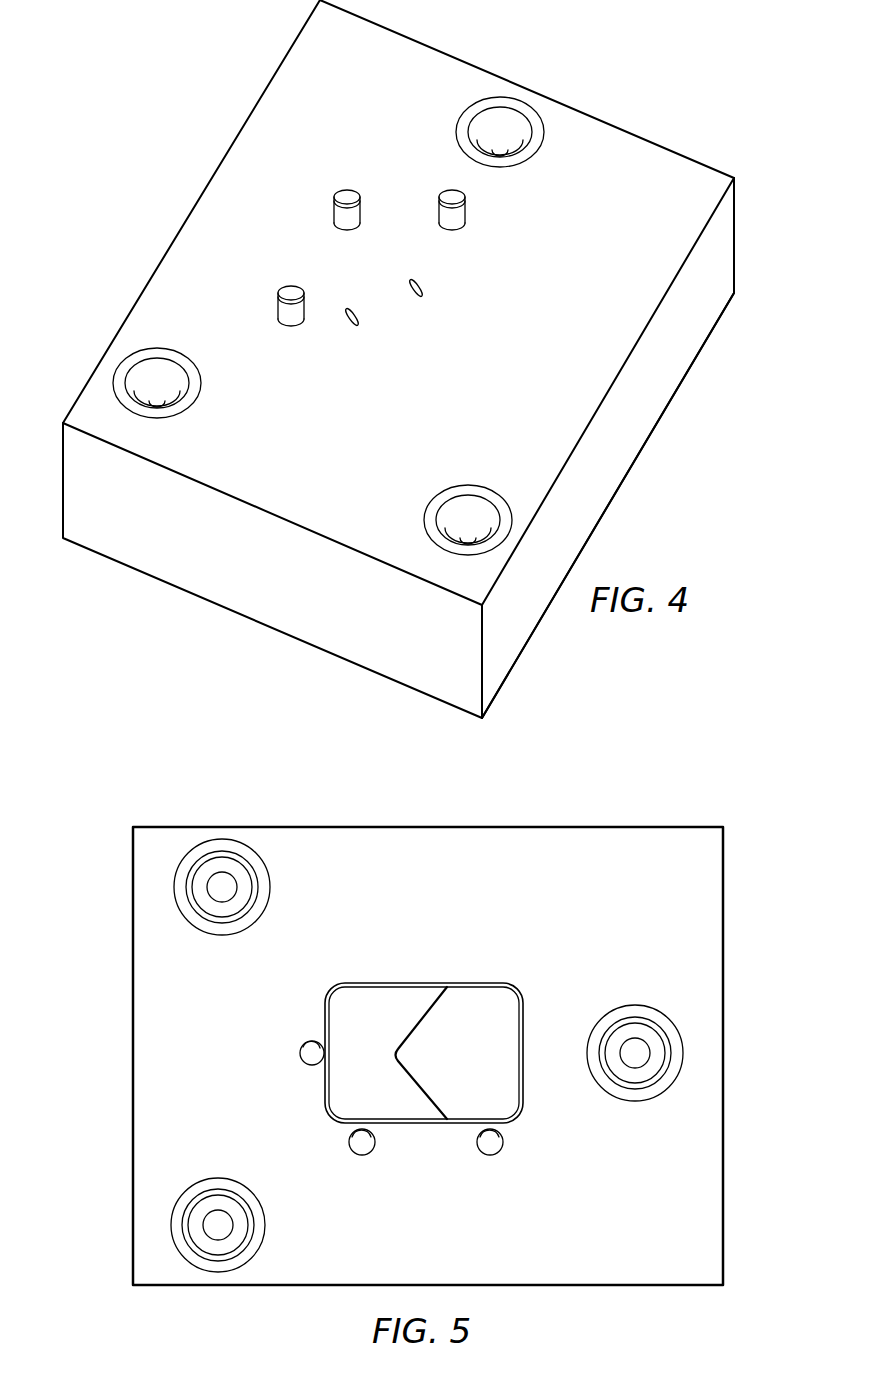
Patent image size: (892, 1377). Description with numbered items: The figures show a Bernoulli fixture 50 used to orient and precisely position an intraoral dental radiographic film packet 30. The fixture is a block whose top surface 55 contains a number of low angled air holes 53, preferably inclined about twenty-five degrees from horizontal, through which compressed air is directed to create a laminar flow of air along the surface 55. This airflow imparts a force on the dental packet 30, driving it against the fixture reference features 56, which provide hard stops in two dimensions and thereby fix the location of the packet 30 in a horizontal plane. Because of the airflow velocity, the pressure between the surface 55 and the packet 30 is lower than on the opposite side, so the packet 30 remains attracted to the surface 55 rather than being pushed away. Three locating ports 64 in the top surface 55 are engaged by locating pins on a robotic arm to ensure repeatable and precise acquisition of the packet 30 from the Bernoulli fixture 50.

In FIG. 5, the intraoral dental radiographic film packet 30 is at (500, 1080).
In FIG. 4, the Bernoulli fixture 50 is at (668, 108).
In FIG. 4, the air holes 53 is at (345, 326).
In FIG. 4, the top surface 55 is at (657, 283).
In FIG. 5, the top surface 55 is at (705, 1183).
In FIG. 4, the fixture reference features 56 is at (355, 192).
In FIG. 5, the fixture reference features 56 is at (305, 1063).
In FIG. 4, the locating ports 64 is at (512, 108).
In FIG. 5, the locating ports 64 is at (222, 915).